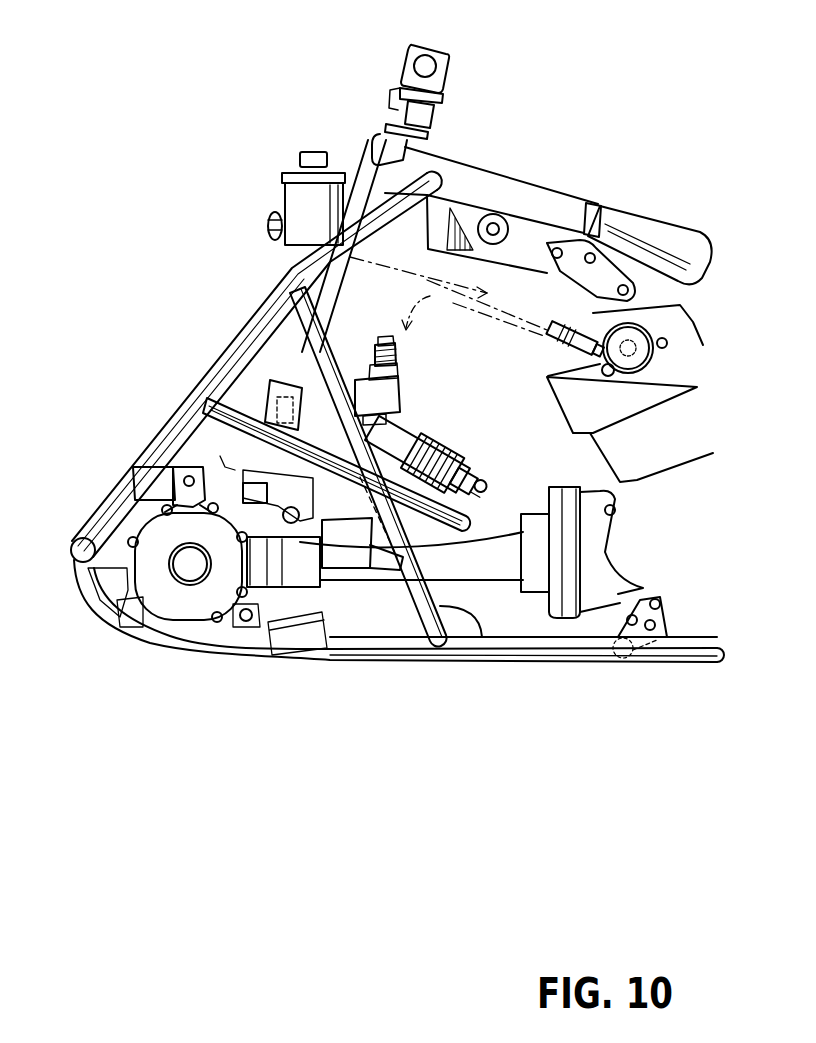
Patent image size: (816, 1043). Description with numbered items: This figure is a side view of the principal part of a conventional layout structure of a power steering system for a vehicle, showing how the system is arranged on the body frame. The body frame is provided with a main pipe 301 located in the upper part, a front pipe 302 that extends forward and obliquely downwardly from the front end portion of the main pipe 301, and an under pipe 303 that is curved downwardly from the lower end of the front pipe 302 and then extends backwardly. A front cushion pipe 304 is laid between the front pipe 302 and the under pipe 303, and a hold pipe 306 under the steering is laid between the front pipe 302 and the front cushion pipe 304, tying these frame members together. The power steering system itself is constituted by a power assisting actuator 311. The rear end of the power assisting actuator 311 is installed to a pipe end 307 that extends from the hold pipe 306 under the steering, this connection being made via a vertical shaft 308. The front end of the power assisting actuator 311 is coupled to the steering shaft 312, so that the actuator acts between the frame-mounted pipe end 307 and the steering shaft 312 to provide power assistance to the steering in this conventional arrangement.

The main pipe 301 is at (500, 176).
The front pipe 302 is at (160, 440).
The under pipe 303 is at (368, 660).
The front cushion pipe 304 is at (483, 650).
The hold pipe under the steering 306 is at (243, 408).
The pipe end 307 is at (440, 523).
The vertical shaft 308 is at (440, 493).
The power assisting actuator 311 is at (413, 423).
The steering shaft 312 is at (298, 290).